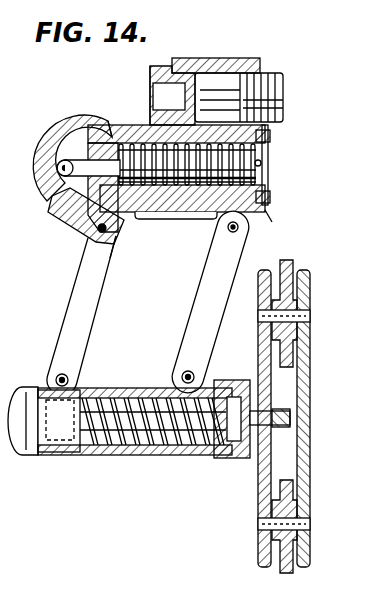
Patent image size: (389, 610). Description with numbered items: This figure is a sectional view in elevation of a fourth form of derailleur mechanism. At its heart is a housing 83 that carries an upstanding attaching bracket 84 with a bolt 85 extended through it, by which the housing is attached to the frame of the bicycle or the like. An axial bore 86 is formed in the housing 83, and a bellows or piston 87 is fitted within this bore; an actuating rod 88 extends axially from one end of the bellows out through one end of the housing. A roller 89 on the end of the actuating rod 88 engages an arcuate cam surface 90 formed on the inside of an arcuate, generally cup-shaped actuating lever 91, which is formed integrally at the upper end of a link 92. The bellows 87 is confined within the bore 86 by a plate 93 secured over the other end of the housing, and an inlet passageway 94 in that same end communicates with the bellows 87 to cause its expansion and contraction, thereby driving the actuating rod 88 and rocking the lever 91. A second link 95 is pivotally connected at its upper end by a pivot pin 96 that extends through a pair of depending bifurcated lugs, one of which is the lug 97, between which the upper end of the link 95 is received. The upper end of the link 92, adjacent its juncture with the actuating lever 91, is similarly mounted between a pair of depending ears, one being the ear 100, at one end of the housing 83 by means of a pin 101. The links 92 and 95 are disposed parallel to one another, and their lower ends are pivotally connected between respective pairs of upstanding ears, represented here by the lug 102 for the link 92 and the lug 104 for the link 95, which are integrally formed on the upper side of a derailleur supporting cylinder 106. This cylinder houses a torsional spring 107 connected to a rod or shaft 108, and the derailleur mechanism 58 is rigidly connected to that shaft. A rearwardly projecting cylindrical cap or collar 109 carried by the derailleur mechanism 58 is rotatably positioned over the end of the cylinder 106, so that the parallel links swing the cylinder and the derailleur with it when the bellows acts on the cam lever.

The derailleur mechanism 58 is at (312, 406).
The housing 83 is at (148, 124).
The attaching bracket 84 is at (205, 58).
The bolt 85 is at (270, 72).
The axial bore 86 is at (150, 212).
The bellows or piston 87 is at (268, 193).
The actuating rod 88 is at (62, 216).
The roller 89 is at (52, 124).
The arcuate cam surface 90 is at (80, 116).
The actuating lever 91 is at (36, 178).
The link 92 is at (74, 273).
The plate 93 is at (270, 138).
The inlet passageway 94 is at (262, 163).
The second link 95 is at (243, 250).
The pivot pin 96 is at (240, 227).
The depending bifurcated lug 97 is at (214, 222).
The depending bifurcated lug or ear 100 is at (110, 232).
The pin 101 is at (108, 280).
The upstanding ear or lug 102 is at (46, 378).
The upstanding ear or lug 104 is at (176, 370).
The derailleur supporting cylinder 106 is at (136, 457).
The torsional spring 107 is at (172, 455).
The rod or shaft 108 is at (248, 458).
The cylindrical cap or collar 109 is at (230, 382).